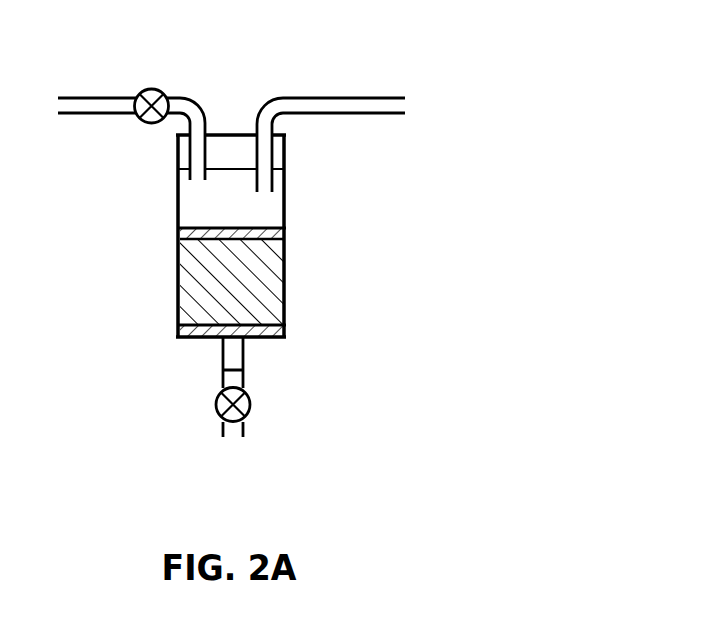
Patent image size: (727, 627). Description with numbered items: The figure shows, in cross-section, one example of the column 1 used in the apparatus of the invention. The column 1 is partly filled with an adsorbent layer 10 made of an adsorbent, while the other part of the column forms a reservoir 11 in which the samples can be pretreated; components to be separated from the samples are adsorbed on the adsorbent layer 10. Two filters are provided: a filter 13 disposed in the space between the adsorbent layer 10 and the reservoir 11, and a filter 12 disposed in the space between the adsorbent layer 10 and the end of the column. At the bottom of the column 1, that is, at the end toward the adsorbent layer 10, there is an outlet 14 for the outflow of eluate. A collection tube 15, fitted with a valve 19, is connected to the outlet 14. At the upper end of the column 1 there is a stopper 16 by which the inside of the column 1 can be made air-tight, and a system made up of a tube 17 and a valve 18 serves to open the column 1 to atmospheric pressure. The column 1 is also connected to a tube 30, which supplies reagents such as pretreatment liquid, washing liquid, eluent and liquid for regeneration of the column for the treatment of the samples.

The column 1 is at (177, 207).
The adsorbent layer 10 is at (265, 298).
The reservoir 11 is at (270, 206).
The filter 12 is at (285, 333).
The filter 13 is at (285, 234).
The outlet 14 is at (222, 355).
The collection tube 15 is at (243, 378).
The stopper 16 is at (176, 149).
The tube 17 is at (188, 97).
The valve 18 is at (140, 92).
The valve 19 is at (245, 420).
The tube 30 is at (312, 97).